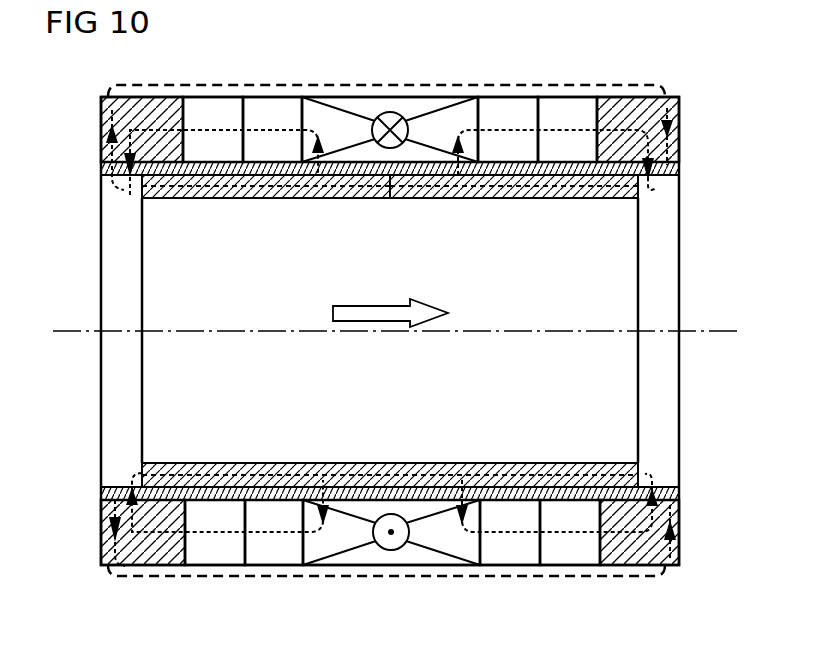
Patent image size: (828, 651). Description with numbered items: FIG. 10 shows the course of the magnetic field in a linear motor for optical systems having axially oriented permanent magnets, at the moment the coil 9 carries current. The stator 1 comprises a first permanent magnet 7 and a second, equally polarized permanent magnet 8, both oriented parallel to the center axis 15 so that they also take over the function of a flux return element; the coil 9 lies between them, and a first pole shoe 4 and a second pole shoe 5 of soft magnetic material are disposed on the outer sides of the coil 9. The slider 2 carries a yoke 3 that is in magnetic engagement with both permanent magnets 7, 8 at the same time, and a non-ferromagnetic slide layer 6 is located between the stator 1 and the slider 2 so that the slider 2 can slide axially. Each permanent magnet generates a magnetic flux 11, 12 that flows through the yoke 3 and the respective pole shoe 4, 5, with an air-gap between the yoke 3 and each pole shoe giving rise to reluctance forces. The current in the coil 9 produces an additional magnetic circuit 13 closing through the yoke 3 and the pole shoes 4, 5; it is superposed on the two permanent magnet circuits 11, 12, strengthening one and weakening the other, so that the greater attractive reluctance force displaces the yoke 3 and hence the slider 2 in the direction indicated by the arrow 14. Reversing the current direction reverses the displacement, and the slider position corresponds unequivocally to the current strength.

The electromagnetic actuator device 1 is at (688, 138).
The slider 2 is at (618, 281).
The yoke 3 is at (388, 480).
The first pole shoe 4 is at (146, 553).
The second pole shoe 5 is at (643, 555).
The slide layer 6 is at (103, 494).
The first permanent magnet 7 is at (290, 553).
The second permanent magnet 8 is at (528, 555).
The coil 9 is at (402, 555).
The magnetic flux of first permanent magnet 11 is at (233, 199).
The magnetic flux of second permanent magnet 12 is at (566, 198).
The magnetic circuit generated by the coil current 13 is at (325, 84).
The flow direction arrow 14 is at (375, 312).
The center axis 15 is at (63, 334).